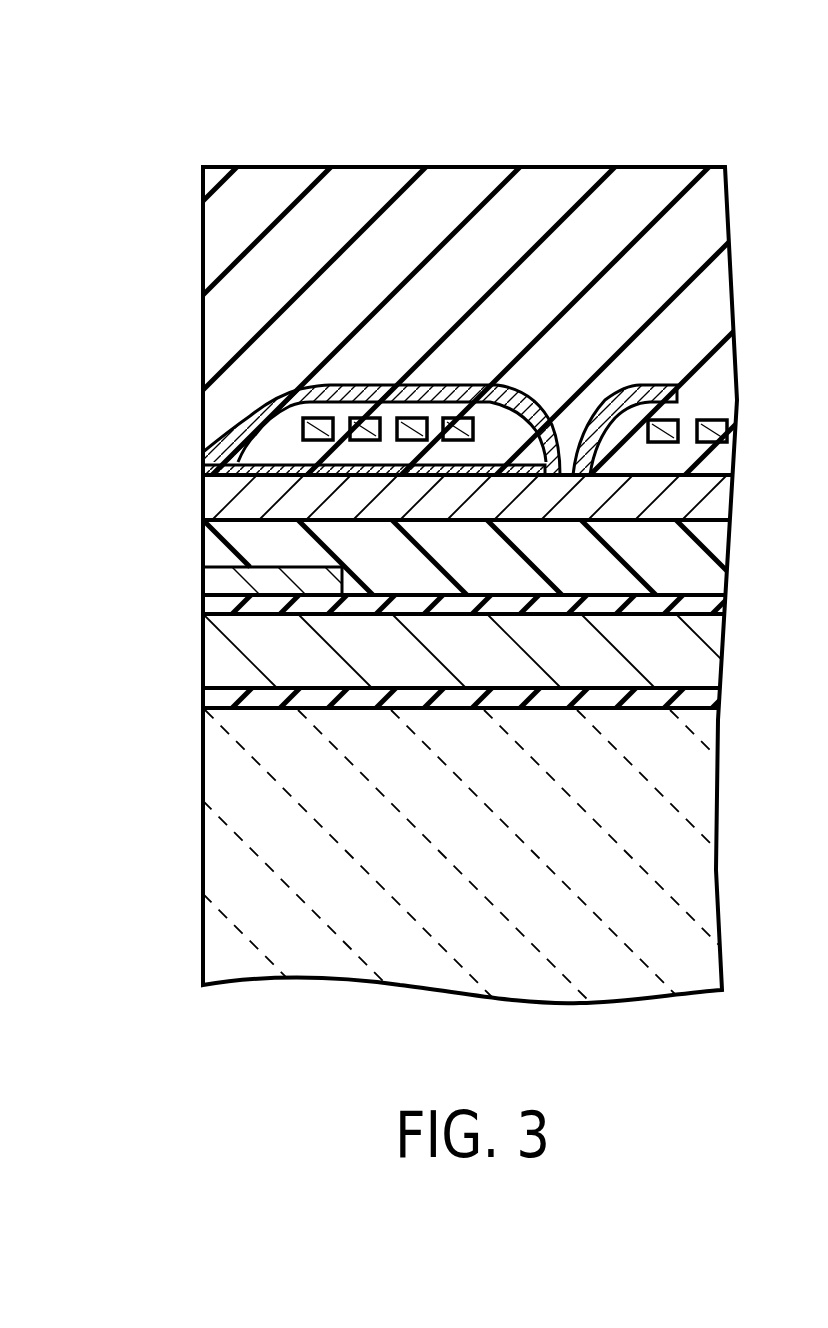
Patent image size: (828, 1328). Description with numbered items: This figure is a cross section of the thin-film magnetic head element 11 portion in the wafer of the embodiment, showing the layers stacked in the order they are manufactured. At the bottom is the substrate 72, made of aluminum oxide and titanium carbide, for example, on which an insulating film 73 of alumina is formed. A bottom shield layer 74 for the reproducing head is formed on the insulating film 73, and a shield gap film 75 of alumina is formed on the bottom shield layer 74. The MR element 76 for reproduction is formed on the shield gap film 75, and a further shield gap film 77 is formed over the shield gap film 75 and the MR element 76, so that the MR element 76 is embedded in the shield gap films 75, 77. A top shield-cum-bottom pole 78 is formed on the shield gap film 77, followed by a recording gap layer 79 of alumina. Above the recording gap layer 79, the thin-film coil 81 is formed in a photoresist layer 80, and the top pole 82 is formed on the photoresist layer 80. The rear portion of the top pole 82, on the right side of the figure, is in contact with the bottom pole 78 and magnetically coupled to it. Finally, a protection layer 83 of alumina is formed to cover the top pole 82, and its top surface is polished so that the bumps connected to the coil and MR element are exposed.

The thin-film magnetic head element 11 is at (673, 122).
The substrate 72 is at (212, 858).
The insulating film 73 is at (212, 700).
The bottom shield layer 74 is at (212, 668).
The shield gap film 75 is at (212, 608).
The MR element 76 is at (212, 576).
The shield gap film 77 is at (212, 546).
The top shield-cum-bottom pole 78 is at (212, 502).
The recording gap layer 79 is at (205, 470).
The photoresist layer 80 is at (240, 398).
The thin-film coil 81 is at (300, 405).
The top pole 82 is at (460, 385).
The protection layer 83 is at (242, 214).